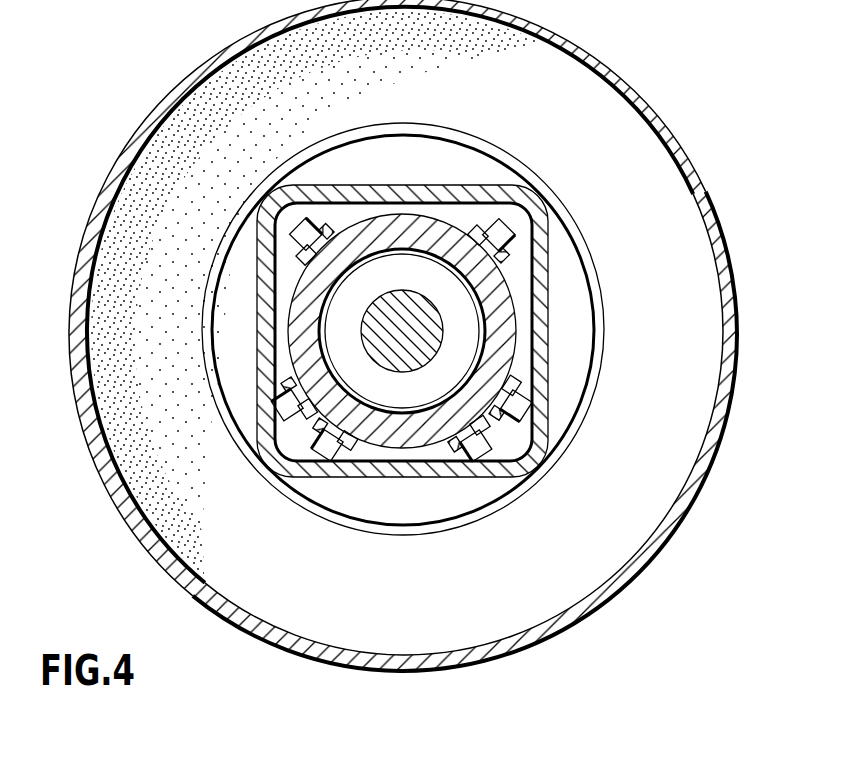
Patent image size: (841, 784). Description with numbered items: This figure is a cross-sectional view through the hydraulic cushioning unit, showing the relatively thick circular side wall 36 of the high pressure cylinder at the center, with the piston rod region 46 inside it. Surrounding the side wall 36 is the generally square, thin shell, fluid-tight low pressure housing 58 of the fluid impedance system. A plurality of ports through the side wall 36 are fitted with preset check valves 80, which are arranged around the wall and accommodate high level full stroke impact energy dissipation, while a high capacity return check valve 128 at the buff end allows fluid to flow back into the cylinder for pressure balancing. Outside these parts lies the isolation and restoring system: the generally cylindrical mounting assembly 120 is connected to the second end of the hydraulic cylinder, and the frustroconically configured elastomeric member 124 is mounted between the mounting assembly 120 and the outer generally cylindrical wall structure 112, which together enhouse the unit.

The outer generally cylindrical wall structure 112 is at (727, 358).
The frustroconically configured elastomeric member 124 is at (178, 138).
The generally cylindrical mounting assembly 120 is at (244, 456).
The low pressure housing 58 is at (524, 192).
The circular side wall 36 is at (512, 320).
The shaft 46 is at (352, 349).
The preset check valve 80 is at (322, 222).
The high capacity return check valve 128 is at (452, 450).